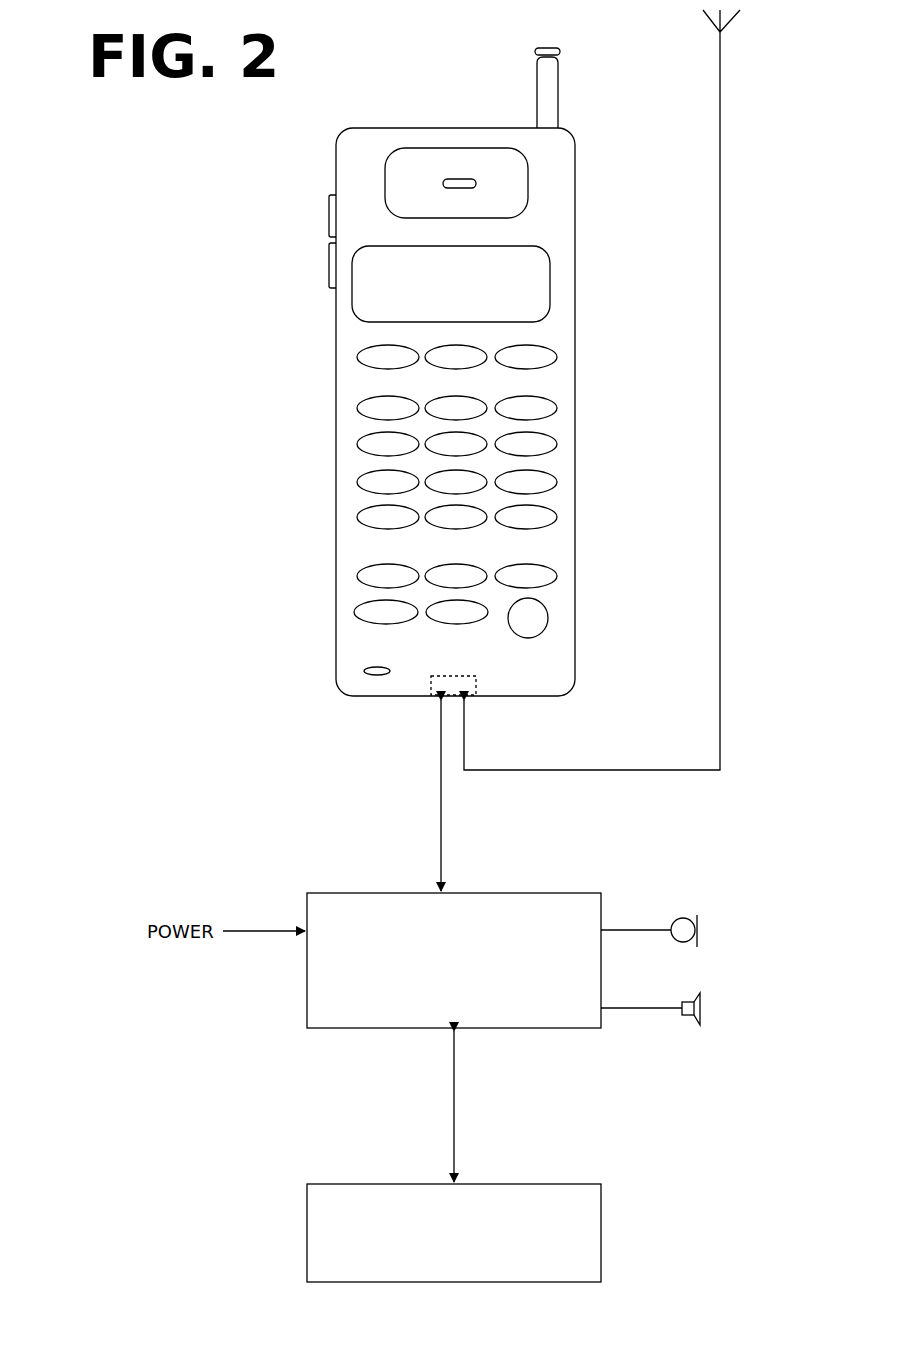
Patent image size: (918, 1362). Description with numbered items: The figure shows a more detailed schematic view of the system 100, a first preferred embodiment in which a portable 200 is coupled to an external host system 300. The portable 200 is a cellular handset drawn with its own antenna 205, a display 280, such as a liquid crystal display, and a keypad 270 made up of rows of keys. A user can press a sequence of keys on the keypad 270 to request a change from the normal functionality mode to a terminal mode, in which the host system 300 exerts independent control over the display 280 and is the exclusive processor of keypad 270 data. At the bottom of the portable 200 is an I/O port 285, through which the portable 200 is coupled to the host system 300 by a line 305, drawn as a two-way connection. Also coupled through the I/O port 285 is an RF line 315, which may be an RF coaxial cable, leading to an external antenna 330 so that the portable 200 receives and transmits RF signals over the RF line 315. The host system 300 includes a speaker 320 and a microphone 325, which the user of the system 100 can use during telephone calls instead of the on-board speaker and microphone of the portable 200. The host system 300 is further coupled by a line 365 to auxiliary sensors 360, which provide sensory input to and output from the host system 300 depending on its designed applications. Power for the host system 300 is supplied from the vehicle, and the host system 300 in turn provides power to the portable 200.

The system 100 is at (135, 218).
The portable 200 is at (350, 128).
The antenna 205 is at (560, 89).
The keypad 270 is at (357, 388).
The display 280 is at (548, 252).
The I/O port 285 is at (473, 700).
The host system 300 is at (573, 893).
The line 305 is at (441, 787).
The RF line 315 is at (720, 130).
The speaker 320 is at (700, 1000).
The microphone 325 is at (697, 921).
The antenna 330 is at (729, 30).
The auxiliary sensors 360 is at (582, 1184).
The line 365 is at (455, 1090).